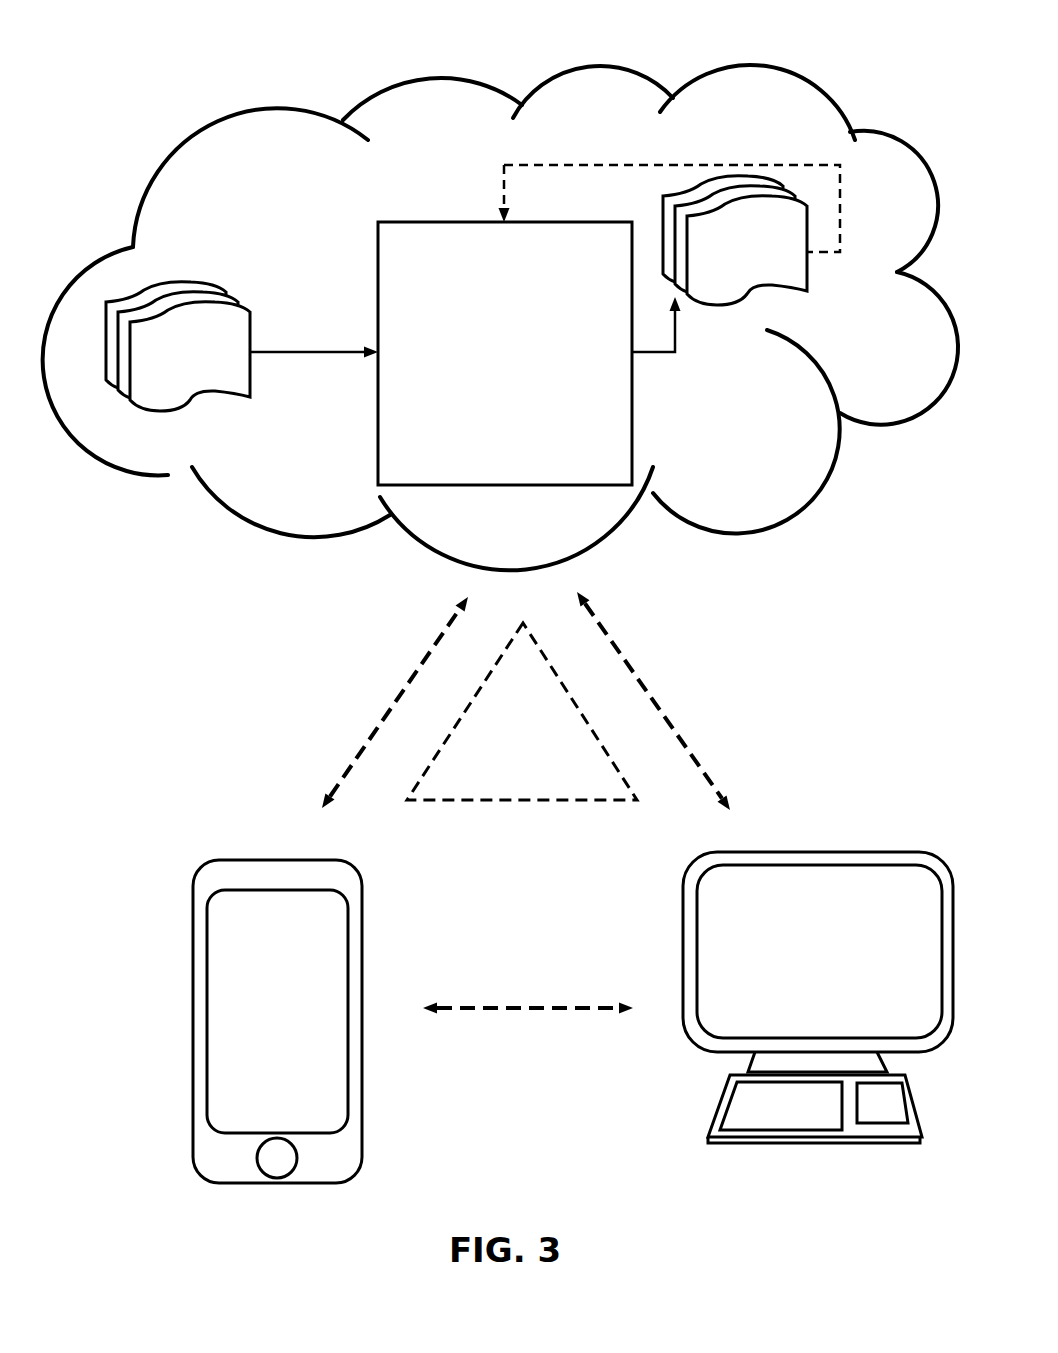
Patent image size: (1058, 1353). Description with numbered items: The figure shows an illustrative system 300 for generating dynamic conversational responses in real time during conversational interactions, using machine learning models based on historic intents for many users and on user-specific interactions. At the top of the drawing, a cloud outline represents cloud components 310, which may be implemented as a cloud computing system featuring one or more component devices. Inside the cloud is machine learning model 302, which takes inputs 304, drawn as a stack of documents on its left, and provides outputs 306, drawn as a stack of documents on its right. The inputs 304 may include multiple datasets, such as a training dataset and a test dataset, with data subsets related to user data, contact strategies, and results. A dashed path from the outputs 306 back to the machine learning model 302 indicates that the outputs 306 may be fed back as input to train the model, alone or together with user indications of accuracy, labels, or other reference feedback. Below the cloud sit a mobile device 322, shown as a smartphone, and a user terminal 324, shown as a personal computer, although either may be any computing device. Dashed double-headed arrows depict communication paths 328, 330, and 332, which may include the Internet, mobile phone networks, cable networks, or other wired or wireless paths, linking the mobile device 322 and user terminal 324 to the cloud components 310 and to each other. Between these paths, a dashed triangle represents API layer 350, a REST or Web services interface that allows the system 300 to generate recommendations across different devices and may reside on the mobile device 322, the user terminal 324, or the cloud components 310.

The system 300 is at (484, 59).
The machine learning model 302 is at (486, 364).
The inputs 304 is at (208, 272).
The outputs 306 is at (790, 290).
The cloud components 310 is at (806, 118).
The mobile device 322 is at (262, 828).
The user terminal 324 is at (815, 828).
The communication path 328 is at (347, 679).
The communication path 330 is at (736, 644).
The communication path 332 is at (524, 970).
The API layer 350 is at (507, 738).